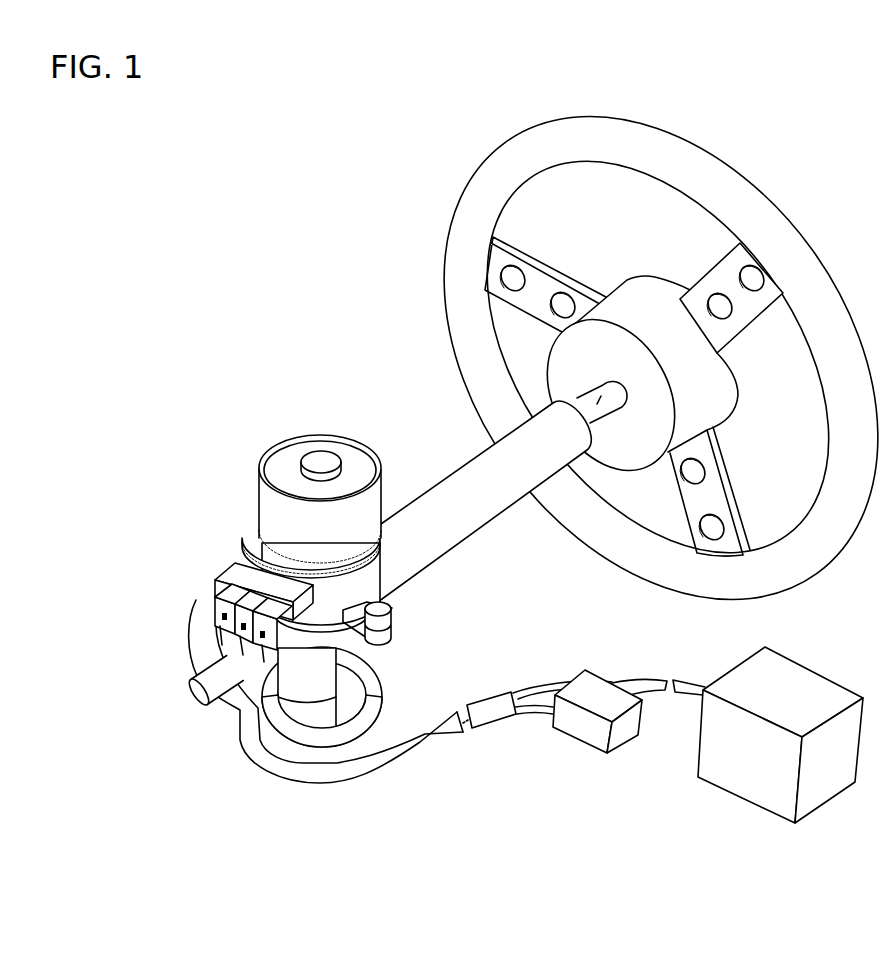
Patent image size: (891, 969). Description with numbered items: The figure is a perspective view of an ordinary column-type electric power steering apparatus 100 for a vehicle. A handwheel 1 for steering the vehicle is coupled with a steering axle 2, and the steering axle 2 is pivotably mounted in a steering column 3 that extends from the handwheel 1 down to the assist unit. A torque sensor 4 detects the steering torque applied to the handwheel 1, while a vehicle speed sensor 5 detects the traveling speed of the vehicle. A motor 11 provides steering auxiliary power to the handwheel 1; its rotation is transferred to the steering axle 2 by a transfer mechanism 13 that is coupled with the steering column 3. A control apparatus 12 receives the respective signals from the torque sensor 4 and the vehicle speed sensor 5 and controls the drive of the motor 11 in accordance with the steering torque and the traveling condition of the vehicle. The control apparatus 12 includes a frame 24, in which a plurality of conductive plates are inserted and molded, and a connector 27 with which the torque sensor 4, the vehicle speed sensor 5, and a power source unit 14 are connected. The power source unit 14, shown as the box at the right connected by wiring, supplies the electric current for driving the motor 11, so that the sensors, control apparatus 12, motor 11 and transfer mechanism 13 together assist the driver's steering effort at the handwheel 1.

The handwheel 1 is at (465, 248).
The steering axle 2 is at (607, 388).
The steering column 3 is at (488, 462).
The torque sensor 4 is at (383, 680).
The vehicle speed sensor 5 is at (583, 685).
The motor 11 is at (280, 458).
The control apparatus 12 is at (380, 570).
The transfer mechanism 13 is at (203, 627).
The power source unit 14 is at (753, 678).
The frame 24 is at (306, 612).
The connector 27 is at (223, 603).
The electric power steering apparatus 100 is at (523, 770).